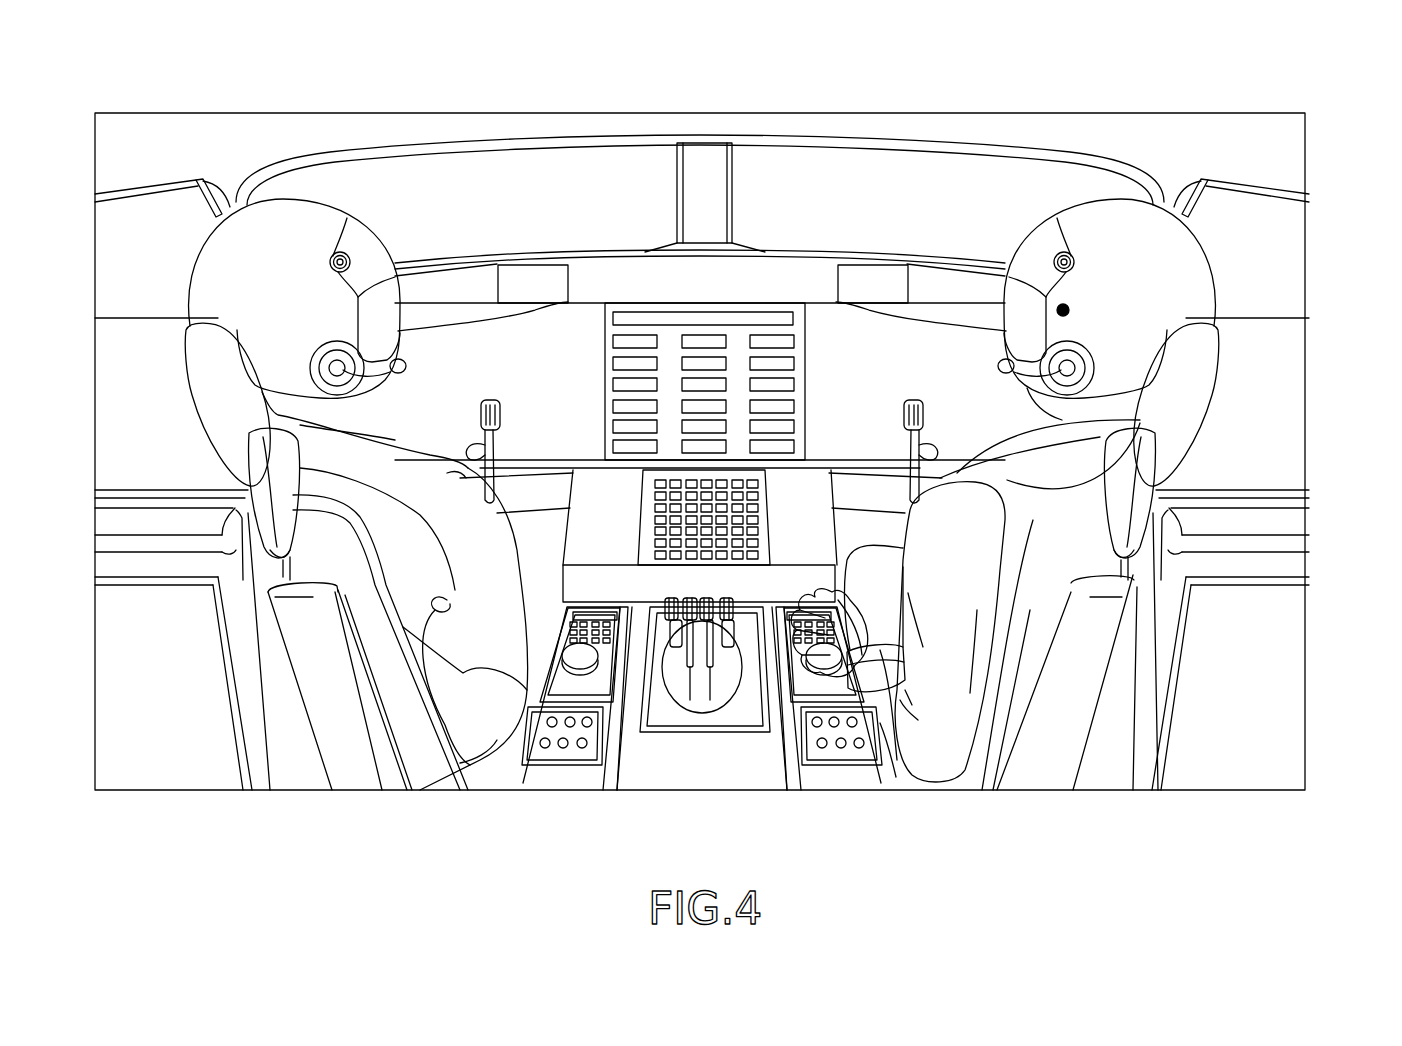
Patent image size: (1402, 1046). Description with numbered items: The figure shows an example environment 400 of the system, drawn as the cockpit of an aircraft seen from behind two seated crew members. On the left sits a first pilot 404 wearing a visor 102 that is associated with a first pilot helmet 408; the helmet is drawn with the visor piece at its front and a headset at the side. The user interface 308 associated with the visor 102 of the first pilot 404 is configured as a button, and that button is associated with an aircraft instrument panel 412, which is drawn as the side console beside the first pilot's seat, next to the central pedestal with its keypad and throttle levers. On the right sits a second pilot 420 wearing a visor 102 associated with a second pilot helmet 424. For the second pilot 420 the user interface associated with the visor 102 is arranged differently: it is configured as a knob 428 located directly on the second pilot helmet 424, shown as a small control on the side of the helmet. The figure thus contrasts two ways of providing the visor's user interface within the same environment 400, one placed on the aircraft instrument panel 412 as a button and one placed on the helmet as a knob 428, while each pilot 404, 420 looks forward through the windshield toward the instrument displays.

The example environment 400 is at (88, 34).
The visor 102 is at (385, 300).
The first pilot helmet 408 is at (293, 286).
The second pilot helmet 424 is at (1141, 286).
The knob 428 is at (1063, 310).
The first pilot 404 is at (416, 516).
The second pilot 420 is at (968, 558).
The user interface 308 is at (596, 592).
The aircraft instrument panel 412 is at (528, 735).